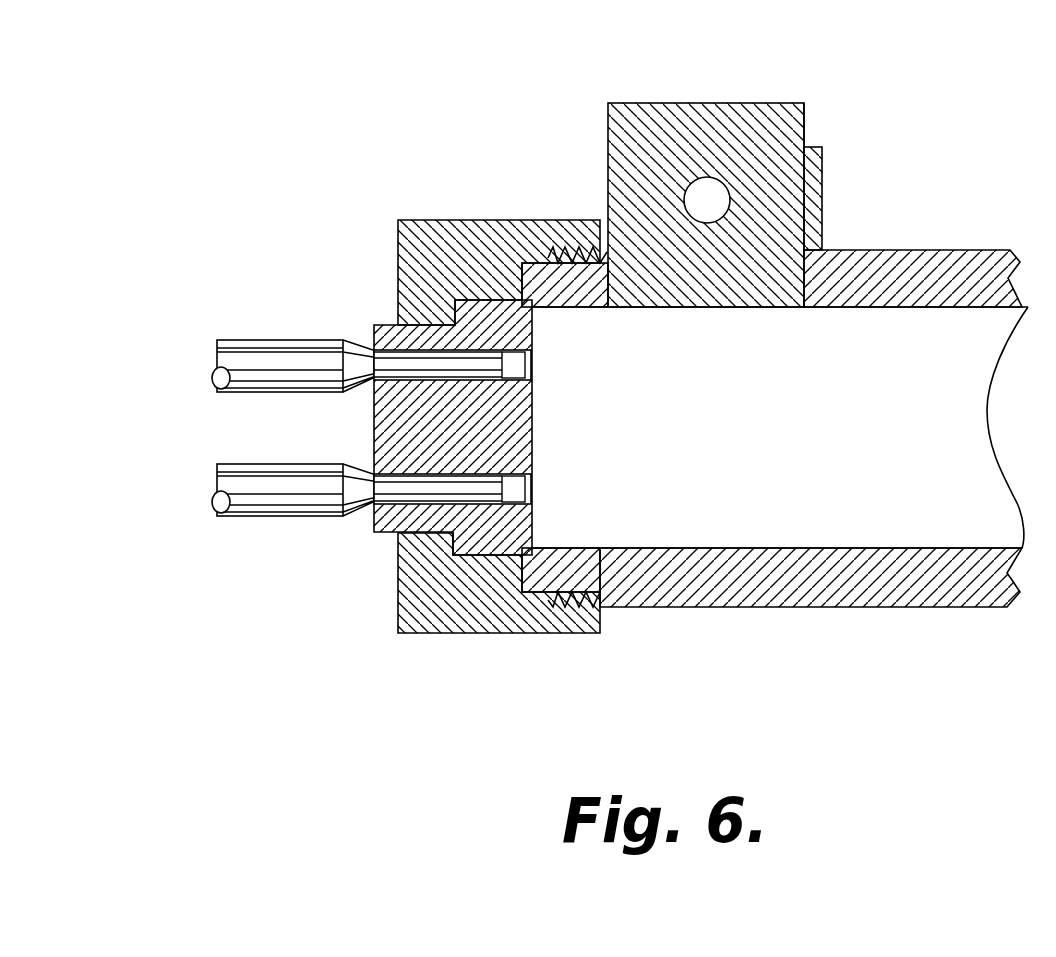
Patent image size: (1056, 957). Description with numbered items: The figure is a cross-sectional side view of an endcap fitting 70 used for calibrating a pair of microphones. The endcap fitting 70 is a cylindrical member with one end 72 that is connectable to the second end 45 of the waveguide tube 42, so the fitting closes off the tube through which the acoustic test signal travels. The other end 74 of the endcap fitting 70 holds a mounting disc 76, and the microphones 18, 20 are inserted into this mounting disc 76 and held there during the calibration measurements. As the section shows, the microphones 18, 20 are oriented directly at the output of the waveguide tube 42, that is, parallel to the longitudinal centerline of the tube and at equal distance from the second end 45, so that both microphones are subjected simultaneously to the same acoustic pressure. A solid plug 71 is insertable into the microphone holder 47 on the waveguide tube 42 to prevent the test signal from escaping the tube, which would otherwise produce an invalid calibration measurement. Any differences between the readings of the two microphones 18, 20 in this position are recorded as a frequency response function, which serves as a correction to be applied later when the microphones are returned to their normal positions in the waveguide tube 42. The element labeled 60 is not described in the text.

The microphone 18 is at (217, 472).
The microphone 20 is at (215, 360).
The waveguide tube 42 is at (927, 277).
The second end of the waveguide tube 45 is at (562, 288).
The microphone holder 47 is at (822, 200).
The mounting block 60 is at (715, 120).
The endcap fitting 70 is at (493, 221).
The solid plug 71 is at (805, 120).
The one end of the endcap fitting 72 is at (550, 633).
The other end of the endcap fitting 74 is at (398, 568).
The mounting disc 76 is at (392, 428).